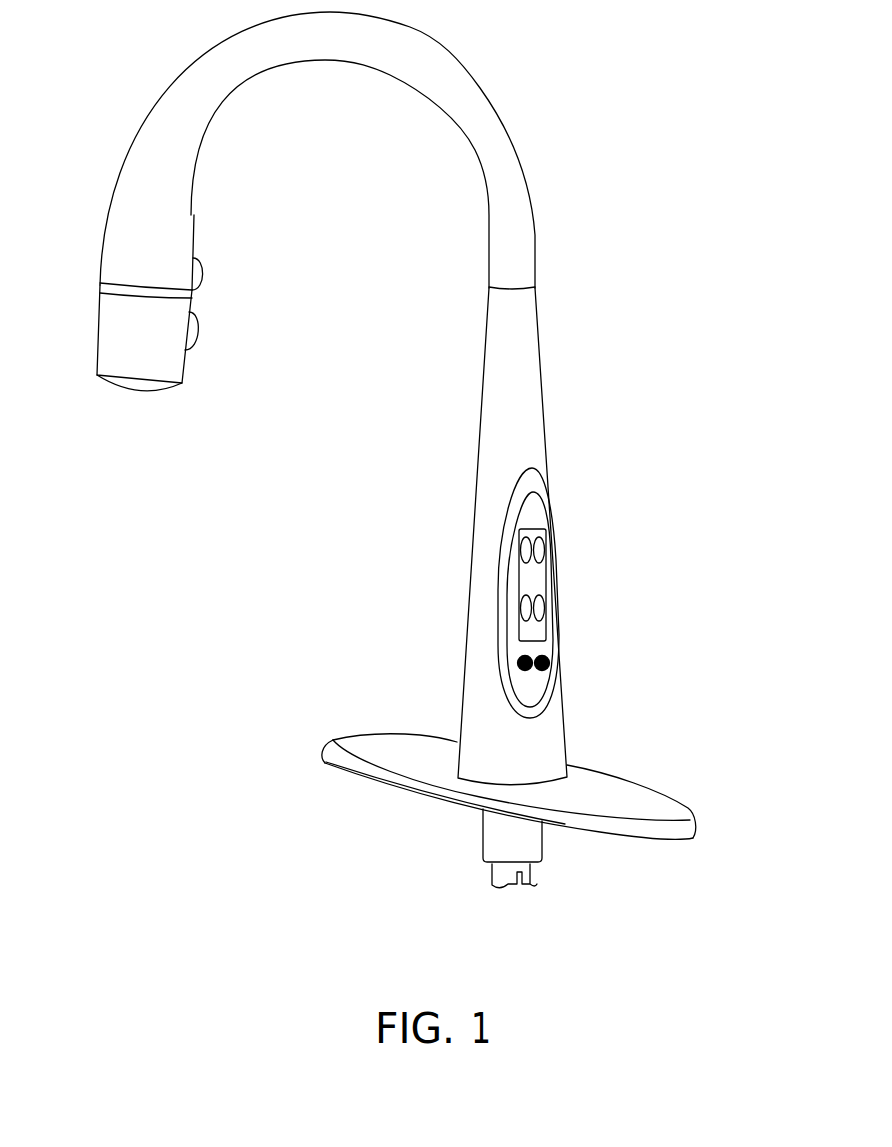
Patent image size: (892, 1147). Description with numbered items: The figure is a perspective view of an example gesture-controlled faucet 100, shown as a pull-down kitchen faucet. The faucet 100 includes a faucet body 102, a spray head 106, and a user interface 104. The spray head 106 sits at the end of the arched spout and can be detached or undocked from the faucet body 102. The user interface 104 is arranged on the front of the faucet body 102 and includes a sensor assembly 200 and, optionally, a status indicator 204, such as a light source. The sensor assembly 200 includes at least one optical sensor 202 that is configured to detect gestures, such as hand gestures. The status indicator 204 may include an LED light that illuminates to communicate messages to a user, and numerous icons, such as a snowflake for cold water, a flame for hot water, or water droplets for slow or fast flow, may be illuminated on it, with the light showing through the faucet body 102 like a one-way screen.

The gesture-controlled faucet 100 is at (636, 354).
The faucet body 102 is at (486, 385).
The user interface 104 is at (538, 576).
The spray head 106 is at (194, 62).
The sensor assembly 200 is at (545, 628).
The optical sensor 202 is at (543, 543).
The status indicator 204 is at (550, 670).